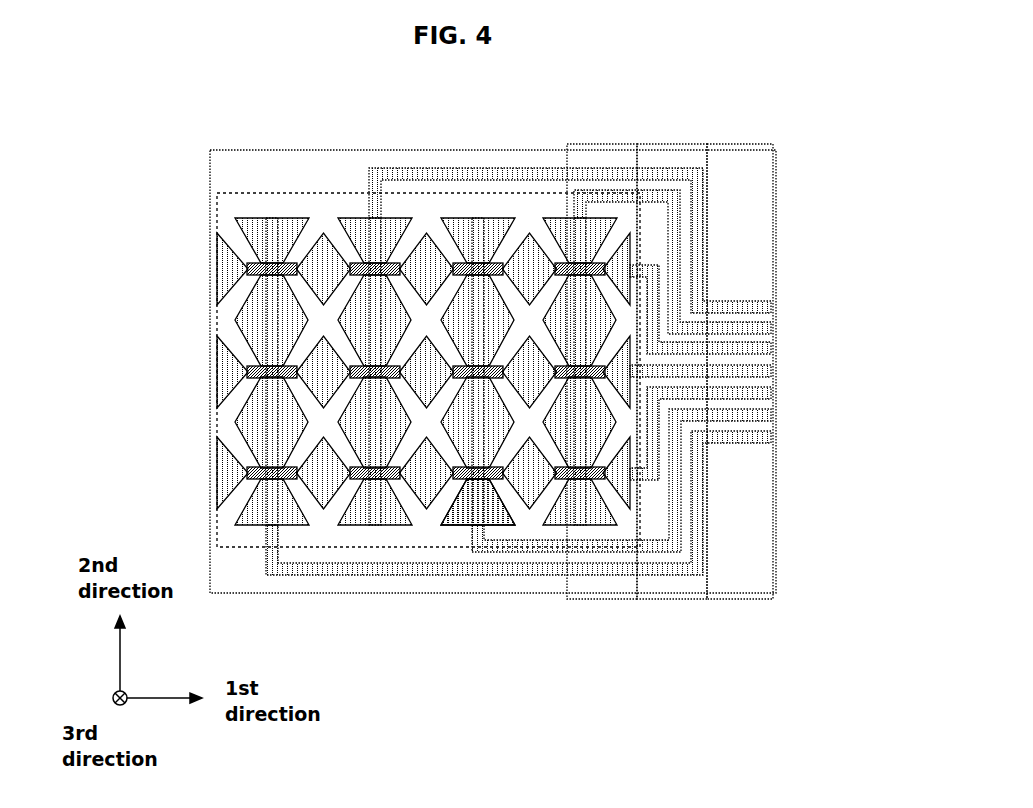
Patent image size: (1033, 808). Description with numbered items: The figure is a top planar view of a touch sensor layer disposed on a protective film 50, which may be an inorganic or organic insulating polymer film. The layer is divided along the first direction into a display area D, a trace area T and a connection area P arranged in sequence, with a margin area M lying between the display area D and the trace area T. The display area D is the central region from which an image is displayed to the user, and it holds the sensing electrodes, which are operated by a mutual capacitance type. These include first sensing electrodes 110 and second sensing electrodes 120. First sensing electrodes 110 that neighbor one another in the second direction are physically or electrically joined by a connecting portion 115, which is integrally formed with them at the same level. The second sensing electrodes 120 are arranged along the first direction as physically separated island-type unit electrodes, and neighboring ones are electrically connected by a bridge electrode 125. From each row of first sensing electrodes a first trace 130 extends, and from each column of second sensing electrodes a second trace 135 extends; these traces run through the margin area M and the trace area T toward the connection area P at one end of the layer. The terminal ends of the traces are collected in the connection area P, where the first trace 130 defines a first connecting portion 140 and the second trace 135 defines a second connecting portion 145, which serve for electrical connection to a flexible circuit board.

The protective film 50 is at (340, 150).
The display area D is at (260, 187).
The first sensing electrodes 110 is at (368, 525).
The connecting portion 115 is at (223, 400).
The second sensing electrodes 120 is at (228, 363).
The bridge electrode 125 is at (458, 525).
The first trace 130 is at (697, 243).
The second trace 135 is at (655, 456).
The first connecting portion 140 is at (774, 307).
The second connecting portion 145 is at (774, 351).
The margin area M is at (602, 415).
The trace area T is at (682, 643).
The connection area P is at (751, 643).